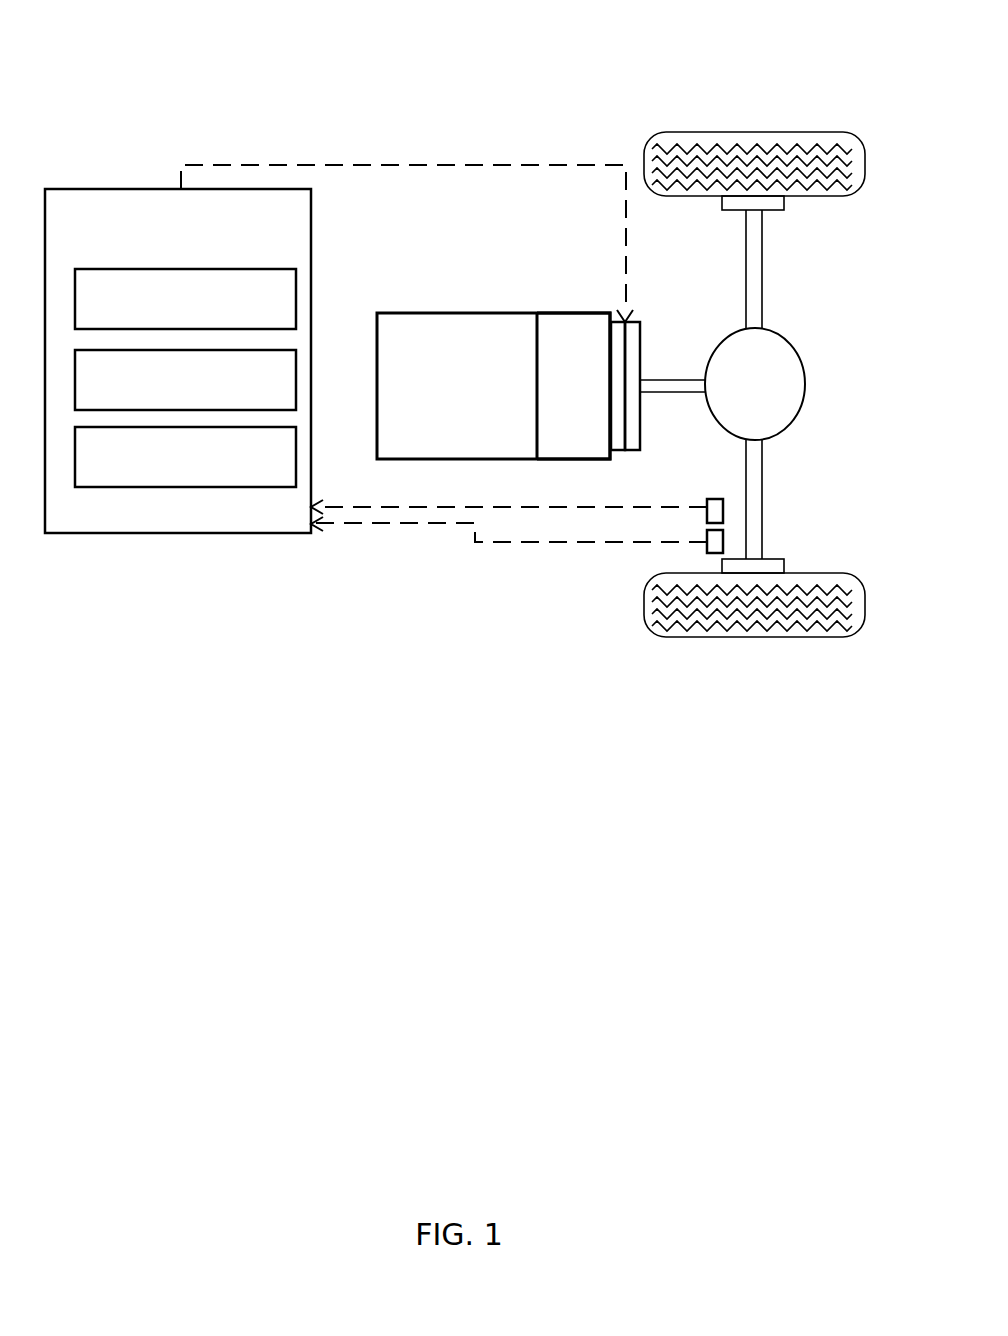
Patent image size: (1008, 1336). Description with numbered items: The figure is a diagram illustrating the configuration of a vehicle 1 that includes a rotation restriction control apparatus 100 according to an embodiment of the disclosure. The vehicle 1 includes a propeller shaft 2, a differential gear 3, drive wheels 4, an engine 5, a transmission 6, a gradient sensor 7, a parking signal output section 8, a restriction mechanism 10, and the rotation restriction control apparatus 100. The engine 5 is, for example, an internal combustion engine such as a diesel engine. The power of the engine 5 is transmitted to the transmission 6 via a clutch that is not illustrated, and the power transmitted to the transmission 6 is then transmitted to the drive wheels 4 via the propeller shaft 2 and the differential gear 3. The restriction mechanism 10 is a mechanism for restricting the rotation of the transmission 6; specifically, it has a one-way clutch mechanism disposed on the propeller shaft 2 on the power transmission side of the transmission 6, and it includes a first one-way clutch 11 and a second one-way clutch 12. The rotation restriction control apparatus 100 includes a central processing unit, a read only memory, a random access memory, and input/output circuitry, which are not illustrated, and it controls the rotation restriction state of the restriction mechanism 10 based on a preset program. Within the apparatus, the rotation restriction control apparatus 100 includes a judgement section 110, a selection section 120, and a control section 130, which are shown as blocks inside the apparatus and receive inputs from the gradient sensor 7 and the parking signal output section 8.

The vehicle 1 is at (462, 376).
The propeller shaft 2 is at (667, 387).
The differential gear 3 is at (806, 382).
The drive wheels 4 is at (792, 130).
The engine 5 is at (466, 312).
The transmission 6 is at (574, 312).
The gradient sensor 7 is at (723, 508).
The parking signal output section 8 is at (723, 541).
The restriction mechanism 10 is at (659, 413).
The first one-way clutch 11 is at (617, 451).
The second one-way clutch 12 is at (633, 451).
The rotation restriction control apparatus 100 is at (99, 189).
The judgement section 110 is at (297, 295).
The selection section 120 is at (297, 375).
The control section 130 is at (297, 448).